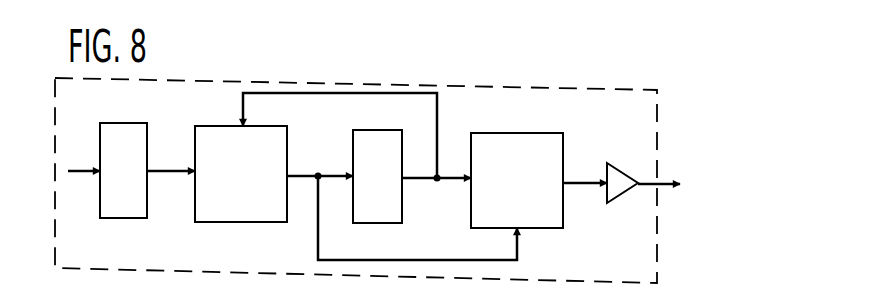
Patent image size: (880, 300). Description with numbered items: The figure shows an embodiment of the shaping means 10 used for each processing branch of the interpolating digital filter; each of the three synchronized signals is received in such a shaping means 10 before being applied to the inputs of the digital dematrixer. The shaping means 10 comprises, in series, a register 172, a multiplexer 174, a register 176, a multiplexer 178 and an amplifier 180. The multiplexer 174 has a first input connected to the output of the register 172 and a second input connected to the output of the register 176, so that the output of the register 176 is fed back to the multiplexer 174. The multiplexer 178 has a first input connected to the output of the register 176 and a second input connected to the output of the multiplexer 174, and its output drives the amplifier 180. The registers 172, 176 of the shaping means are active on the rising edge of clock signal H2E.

The shaping means 10 is at (565, 88).
The register 172 is at (127, 128).
The multiplexer 174 is at (263, 217).
The register 176 is at (360, 152).
The multiplexer 178 is at (494, 138).
The amplifier 180 is at (617, 178).